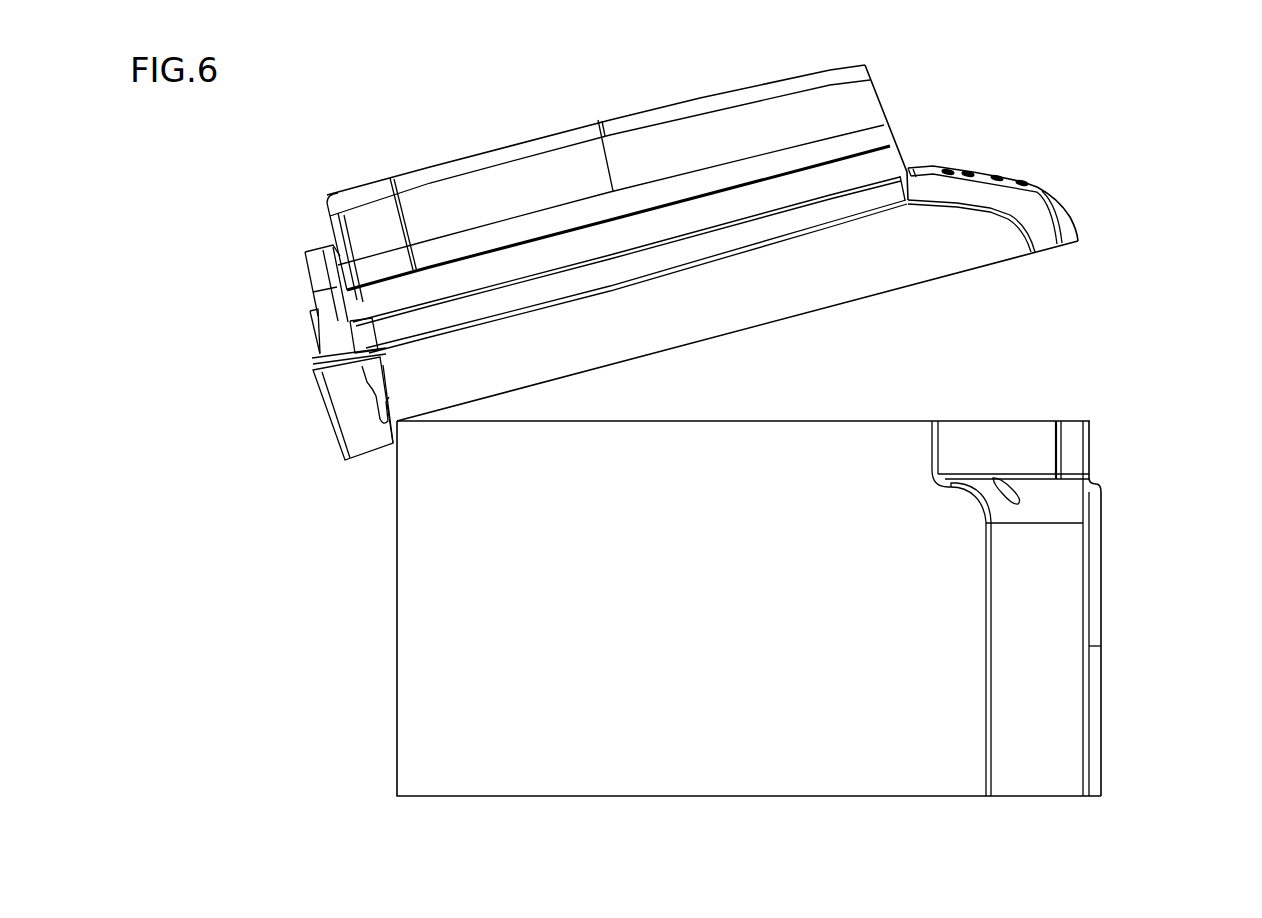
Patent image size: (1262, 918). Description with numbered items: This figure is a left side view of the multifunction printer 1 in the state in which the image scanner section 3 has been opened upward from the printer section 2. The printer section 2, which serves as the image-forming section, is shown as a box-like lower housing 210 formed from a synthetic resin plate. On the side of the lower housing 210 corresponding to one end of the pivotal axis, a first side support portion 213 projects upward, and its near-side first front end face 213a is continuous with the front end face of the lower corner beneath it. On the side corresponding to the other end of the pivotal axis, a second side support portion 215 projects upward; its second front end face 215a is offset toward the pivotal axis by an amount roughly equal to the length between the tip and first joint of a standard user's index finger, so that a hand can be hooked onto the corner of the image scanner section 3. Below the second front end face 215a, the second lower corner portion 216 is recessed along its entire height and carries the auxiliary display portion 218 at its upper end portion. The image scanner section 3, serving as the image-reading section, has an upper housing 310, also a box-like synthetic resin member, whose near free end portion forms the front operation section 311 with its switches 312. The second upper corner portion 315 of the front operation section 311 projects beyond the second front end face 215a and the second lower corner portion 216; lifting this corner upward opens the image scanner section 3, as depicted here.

The multifunction printer 1 is at (1211, 59).
The printer section 2 is at (1110, 609).
The image scanner section 3 is at (909, 151).
The lower housing 210 is at (400, 538).
The first side support portion 213 is at (1022, 436).
The first front end face 213a is at (1092, 442).
The second side support portion 215 is at (890, 434).
The second front end face 215a is at (943, 447).
The second lower corner portion 216 is at (1060, 722).
The auxiliary display portion 218 is at (1012, 488).
The upper housing 310 is at (975, 260).
The front operation section 311 is at (937, 167).
The switches 312 is at (997, 178).
The second upper corner portion 315 is at (1068, 221).